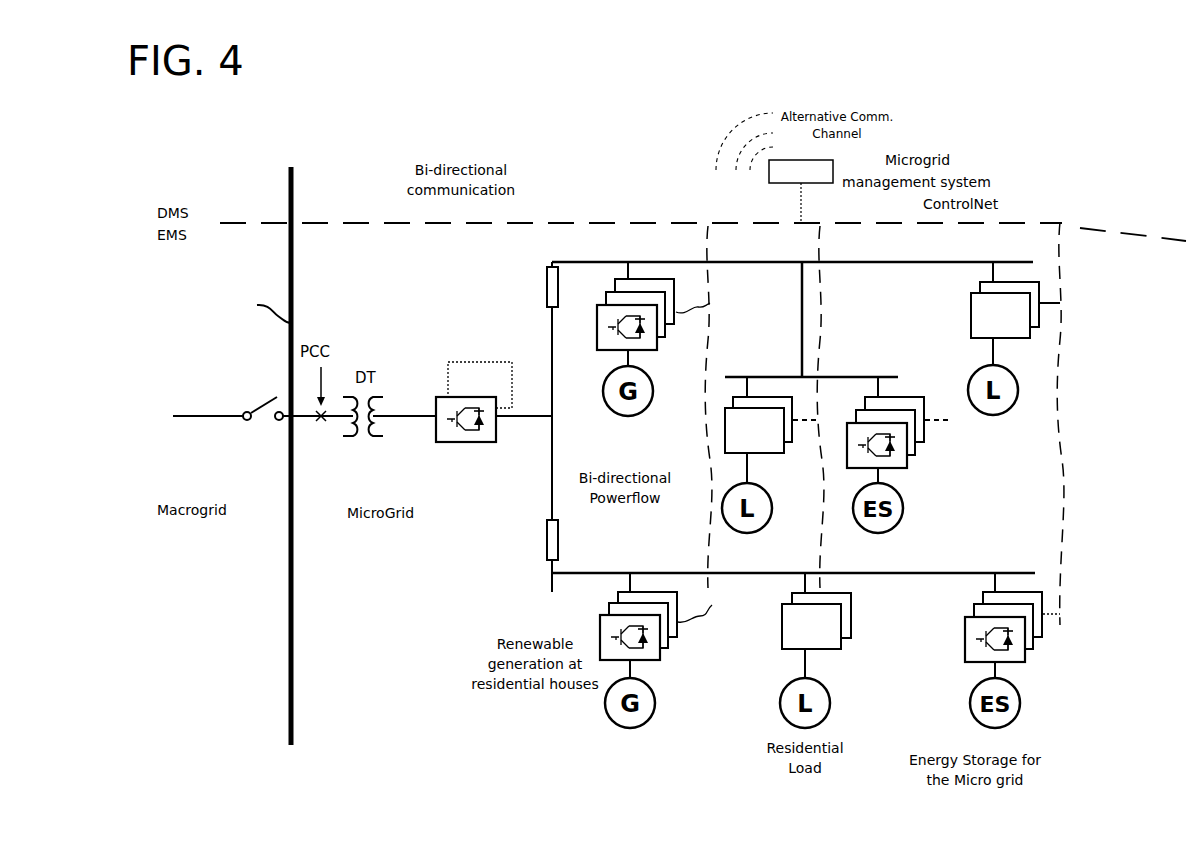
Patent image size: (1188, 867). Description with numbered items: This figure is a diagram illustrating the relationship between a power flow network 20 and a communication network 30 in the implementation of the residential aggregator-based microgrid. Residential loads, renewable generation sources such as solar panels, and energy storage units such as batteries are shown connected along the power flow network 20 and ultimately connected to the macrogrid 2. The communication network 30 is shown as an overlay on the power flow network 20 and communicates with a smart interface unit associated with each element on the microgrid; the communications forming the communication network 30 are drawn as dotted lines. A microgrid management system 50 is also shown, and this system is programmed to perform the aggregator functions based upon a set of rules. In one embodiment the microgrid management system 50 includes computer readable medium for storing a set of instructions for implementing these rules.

The macrogrid 2 is at (203, 423).
The power flow network 20 is at (546, 345).
The communication network 30 is at (620, 223).
The microgrid management system 50 is at (835, 170).